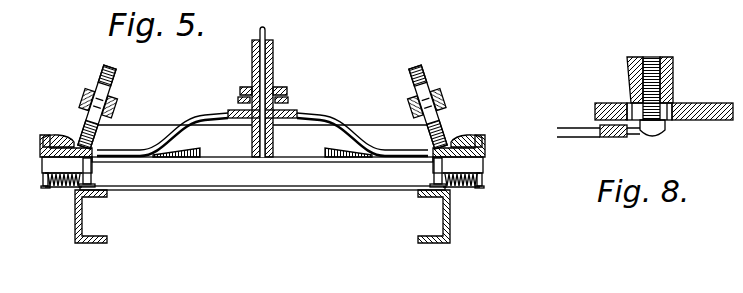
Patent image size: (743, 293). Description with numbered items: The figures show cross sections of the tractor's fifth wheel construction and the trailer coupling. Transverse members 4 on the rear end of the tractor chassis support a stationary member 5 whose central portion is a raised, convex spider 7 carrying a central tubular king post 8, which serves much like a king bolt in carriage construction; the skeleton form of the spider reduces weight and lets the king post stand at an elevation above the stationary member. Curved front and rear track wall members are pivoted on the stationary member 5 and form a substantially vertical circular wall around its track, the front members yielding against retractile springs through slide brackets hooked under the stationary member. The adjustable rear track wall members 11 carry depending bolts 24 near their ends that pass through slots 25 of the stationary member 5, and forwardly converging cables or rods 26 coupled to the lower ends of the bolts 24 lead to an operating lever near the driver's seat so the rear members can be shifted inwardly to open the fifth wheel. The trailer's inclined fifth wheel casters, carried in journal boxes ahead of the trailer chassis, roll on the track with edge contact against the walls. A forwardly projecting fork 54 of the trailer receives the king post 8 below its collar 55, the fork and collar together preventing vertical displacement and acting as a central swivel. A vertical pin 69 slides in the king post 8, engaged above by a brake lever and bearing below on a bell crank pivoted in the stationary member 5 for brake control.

In FIG. 5, the transverse members 4 is at (252, 185).
In FIG. 5, the stationary member 5 is at (489, 150).
In FIG. 8, the stationary member 5 is at (705, 103).
In FIG. 5, the spider 7 is at (334, 117).
In FIG. 5, the king post 8 is at (275, 56).
In FIG. 8, the rear track wall members 11 is at (633, 57).
In FIG. 8, the depending bolts 24 is at (652, 57).
In FIG. 8, the slots 25 is at (630, 103).
In FIG. 8, the cables or rods 26 is at (570, 140).
In FIG. 5, the fork 54 is at (238, 100).
In FIG. 5, the collar 55 is at (283, 88).
In FIG. 5, the vertical pin 69 is at (265, 29).